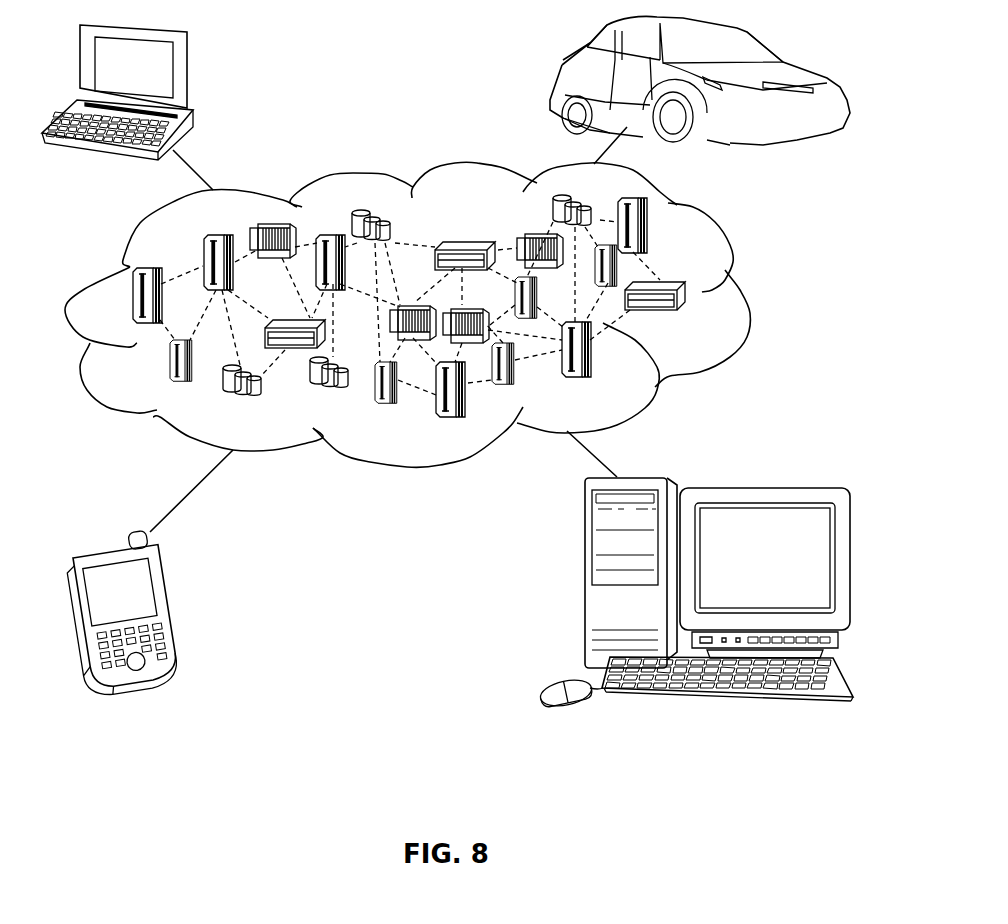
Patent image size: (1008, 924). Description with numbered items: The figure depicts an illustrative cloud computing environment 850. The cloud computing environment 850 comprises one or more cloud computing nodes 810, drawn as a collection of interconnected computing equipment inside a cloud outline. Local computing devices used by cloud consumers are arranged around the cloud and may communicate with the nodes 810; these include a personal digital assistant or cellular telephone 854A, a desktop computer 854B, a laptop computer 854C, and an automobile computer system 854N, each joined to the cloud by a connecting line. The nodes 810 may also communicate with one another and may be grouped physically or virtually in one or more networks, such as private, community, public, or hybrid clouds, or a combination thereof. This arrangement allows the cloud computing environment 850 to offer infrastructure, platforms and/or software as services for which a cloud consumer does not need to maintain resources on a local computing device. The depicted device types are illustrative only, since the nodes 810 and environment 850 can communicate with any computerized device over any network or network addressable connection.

The cloud computing nodes 810 is at (707, 313).
The cloud computing environment 850 is at (732, 255).
The personal digital assistant (PDA) or cellular telephone 854A is at (180, 603).
The desktop computer 854B is at (583, 583).
The laptop computer 854C is at (194, 70).
The automobile computer system 854N is at (548, 75).